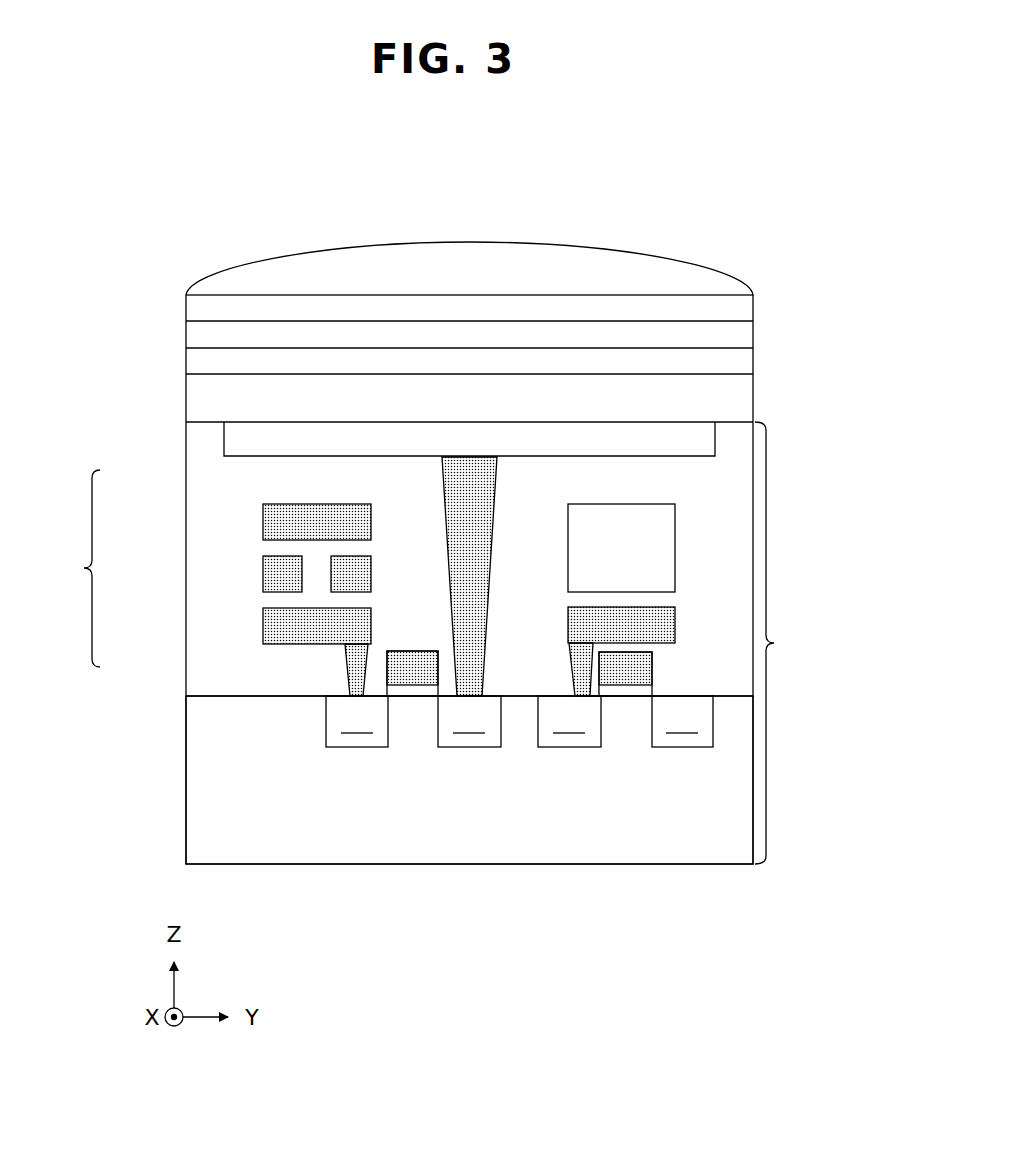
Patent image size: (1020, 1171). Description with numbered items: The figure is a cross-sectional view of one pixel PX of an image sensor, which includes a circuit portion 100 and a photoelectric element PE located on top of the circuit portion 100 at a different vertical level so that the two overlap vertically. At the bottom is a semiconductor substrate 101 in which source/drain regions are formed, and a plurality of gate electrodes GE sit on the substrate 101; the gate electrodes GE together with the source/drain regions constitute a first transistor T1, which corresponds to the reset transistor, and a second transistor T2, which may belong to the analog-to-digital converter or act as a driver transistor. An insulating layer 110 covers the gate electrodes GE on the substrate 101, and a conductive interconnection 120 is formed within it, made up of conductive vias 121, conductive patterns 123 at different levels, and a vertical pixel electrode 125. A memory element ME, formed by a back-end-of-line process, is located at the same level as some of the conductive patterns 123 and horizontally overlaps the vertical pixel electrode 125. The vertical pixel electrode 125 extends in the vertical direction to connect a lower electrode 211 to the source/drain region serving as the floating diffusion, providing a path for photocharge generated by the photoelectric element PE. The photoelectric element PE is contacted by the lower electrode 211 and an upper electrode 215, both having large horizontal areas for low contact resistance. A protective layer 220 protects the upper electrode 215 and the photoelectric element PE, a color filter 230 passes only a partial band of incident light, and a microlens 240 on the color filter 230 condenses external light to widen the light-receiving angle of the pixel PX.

The circuit portion 100 is at (506, 579).
The substrate 101 is at (198, 778).
The insulating layer 110 is at (198, 685).
The conductive interconnection 120 is at (66, 568).
The conductive vias 121 is at (353, 658).
The conductive patterns 123 is at (270, 522).
The vertical pixel electrode 125 is at (452, 478).
The lower electrode 211 is at (230, 440).
The upper electrode 215 is at (198, 365).
The protective layer 220 is at (198, 338).
The color filter 230 is at (198, 311).
The microlens 240 is at (203, 283).
The photoelectric element PE is at (198, 402).
The memory element ME is at (663, 545).
The gate electrodes GE is at (397, 668).
The pixel PX is at (708, 201).
The first transistor T1 is at (413, 740).
The second transistor T2 is at (626, 738).